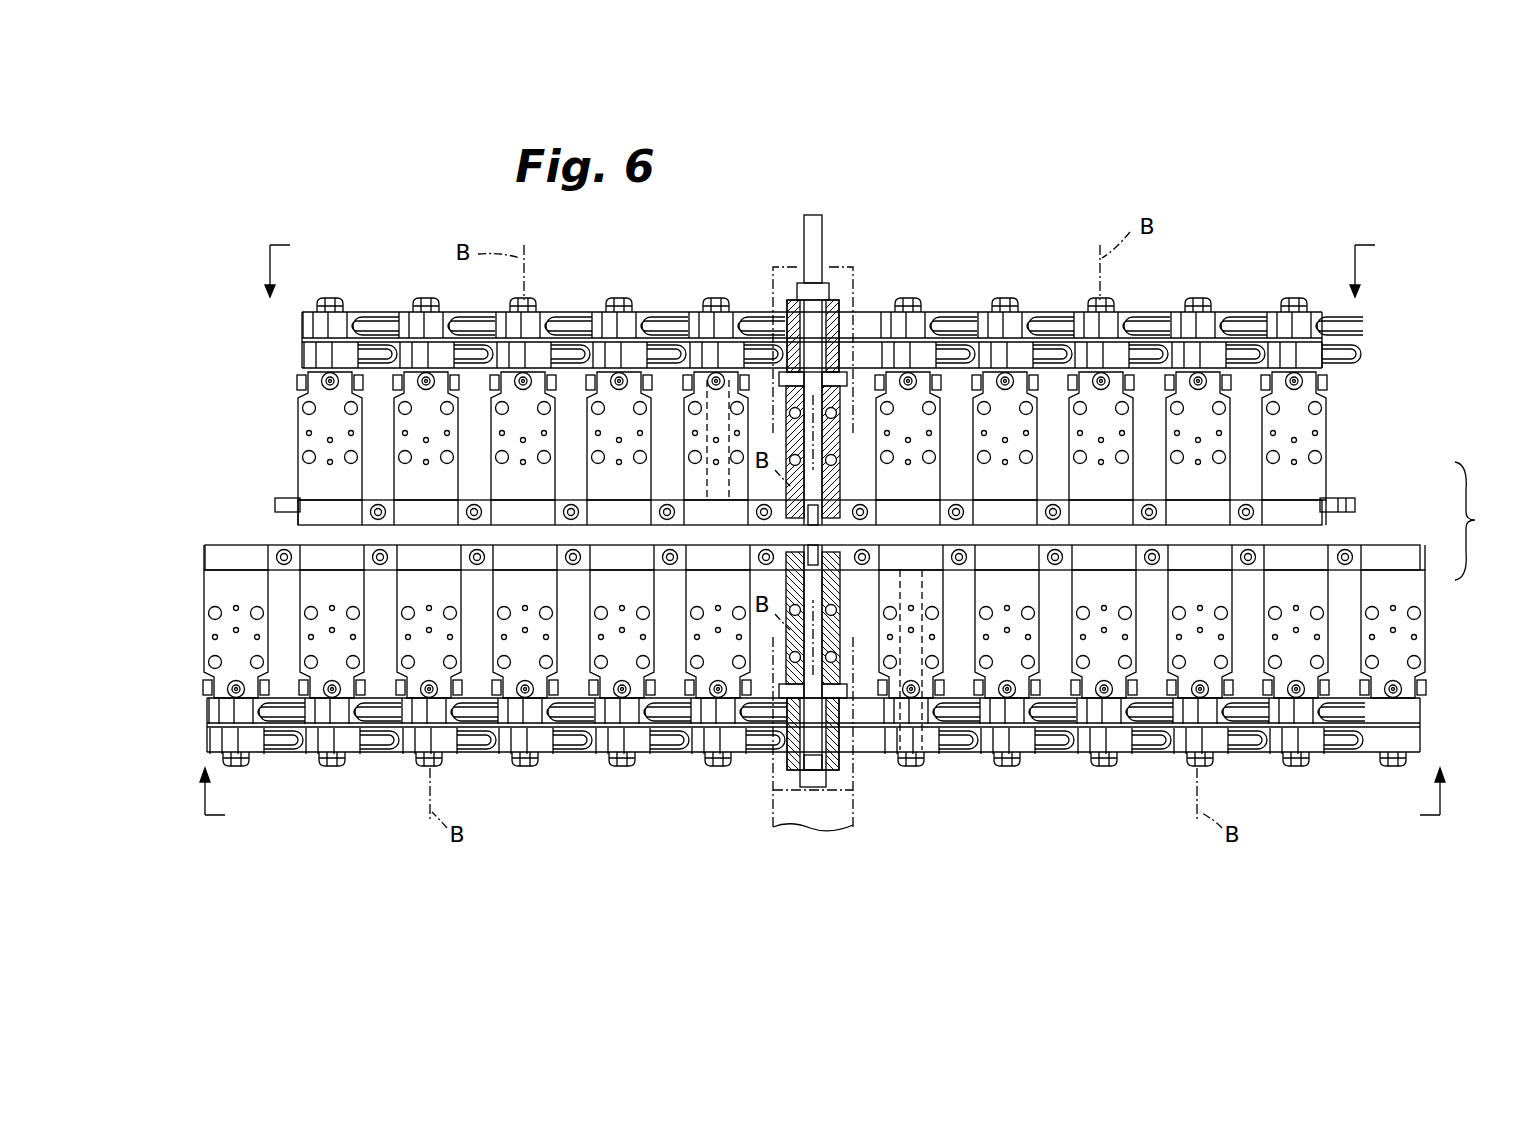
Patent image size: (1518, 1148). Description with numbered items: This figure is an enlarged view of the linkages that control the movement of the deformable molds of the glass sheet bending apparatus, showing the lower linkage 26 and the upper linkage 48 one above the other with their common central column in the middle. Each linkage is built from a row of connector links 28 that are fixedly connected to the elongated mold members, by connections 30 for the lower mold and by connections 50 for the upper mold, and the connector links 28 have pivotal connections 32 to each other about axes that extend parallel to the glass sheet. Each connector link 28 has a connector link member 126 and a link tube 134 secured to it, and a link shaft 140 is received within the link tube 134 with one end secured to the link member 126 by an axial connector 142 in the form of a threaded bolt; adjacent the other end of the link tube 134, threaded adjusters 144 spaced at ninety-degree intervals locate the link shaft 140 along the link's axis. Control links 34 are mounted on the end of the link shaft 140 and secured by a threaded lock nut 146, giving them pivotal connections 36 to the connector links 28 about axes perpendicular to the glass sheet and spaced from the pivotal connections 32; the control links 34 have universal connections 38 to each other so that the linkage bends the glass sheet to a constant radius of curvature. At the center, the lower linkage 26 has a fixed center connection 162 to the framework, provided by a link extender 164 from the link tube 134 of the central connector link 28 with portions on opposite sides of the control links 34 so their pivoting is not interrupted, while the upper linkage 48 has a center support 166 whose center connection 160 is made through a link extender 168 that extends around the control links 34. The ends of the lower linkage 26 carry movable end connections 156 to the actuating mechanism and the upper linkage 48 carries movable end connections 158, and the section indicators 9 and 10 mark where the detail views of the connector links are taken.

The section line 9 is at (820, 286).
The section line 10 is at (819, 776).
The linkage 26 is at (200, 598).
The connector link 28 is at (250, 575).
The connection 30 is at (236, 628).
The pivotal connection 32 is at (474, 518).
The control link 34 is at (563, 330).
The pivotal connection 36 is at (536, 320).
The universal connection 38 is at (788, 330).
The linkage 48 is at (290, 414).
The connection 50 is at (308, 456).
The connector link member 126 is at (585, 512).
The link tube 134 is at (456, 440).
The link shaft 140 is at (840, 462).
The axial connector 142 is at (818, 520).
The threaded adjusters 144 is at (722, 390).
The threaded lock nut 146 is at (714, 324).
The movable end connection 156 is at (212, 572).
The movable end connection 158 is at (284, 498).
The center connection 160 is at (792, 290).
The fixed center connection 162 is at (772, 812).
The link extender 164 is at (830, 790).
The center support 166 is at (830, 225).
The link extender 168 is at (798, 282).